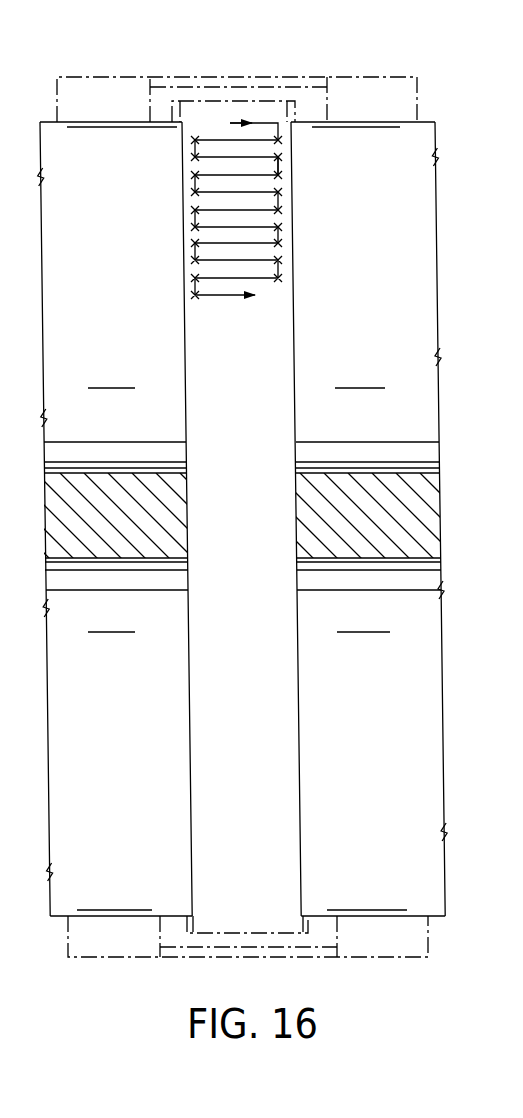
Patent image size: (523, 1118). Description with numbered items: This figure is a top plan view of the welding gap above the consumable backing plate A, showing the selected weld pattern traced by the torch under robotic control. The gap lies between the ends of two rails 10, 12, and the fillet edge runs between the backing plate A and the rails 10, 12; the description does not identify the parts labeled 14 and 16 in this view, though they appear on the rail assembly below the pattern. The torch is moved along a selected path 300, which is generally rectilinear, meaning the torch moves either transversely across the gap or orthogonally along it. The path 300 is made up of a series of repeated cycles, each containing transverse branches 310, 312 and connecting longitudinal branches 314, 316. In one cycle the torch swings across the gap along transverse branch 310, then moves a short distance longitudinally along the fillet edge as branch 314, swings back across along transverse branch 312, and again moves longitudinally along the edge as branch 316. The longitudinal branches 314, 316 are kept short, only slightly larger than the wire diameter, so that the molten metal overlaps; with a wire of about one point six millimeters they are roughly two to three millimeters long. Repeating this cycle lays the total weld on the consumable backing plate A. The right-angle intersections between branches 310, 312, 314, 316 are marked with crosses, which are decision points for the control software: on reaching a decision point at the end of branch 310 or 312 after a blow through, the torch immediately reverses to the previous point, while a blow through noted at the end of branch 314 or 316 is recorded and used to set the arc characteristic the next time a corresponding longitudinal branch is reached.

The rail 10 is at (188, 417).
The rail 12 is at (295, 428).
The lower member 14 is at (192, 698).
The weld zone 16 is at (297, 625).
The selected path 300 is at (236, 151).
The transverse branch 310 is at (255, 138).
The transverse branch 312 is at (215, 158).
The connecting longitudinal branch 314 is at (193, 148).
The connecting longitudinal branch 316 is at (280, 167).
The consumable backing plate A is at (262, 349).